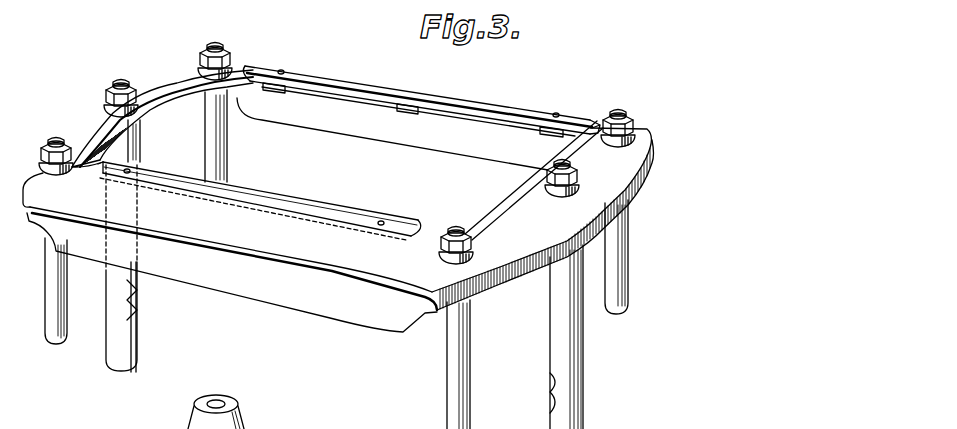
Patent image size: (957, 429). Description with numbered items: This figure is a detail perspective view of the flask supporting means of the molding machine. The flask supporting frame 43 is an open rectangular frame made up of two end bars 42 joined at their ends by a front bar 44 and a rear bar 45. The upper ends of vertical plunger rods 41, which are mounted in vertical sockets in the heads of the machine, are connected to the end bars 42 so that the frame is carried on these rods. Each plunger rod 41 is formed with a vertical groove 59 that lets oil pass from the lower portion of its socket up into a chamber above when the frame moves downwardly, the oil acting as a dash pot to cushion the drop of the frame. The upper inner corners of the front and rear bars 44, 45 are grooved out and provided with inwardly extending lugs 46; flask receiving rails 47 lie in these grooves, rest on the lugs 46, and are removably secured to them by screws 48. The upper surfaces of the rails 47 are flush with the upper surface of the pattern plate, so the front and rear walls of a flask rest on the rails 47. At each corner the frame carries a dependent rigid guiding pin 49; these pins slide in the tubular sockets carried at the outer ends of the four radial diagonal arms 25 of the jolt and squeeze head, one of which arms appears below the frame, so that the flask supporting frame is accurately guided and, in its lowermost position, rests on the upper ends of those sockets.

The radial diagonal arm 25 is at (249, 412).
The plunger rod 41 is at (112, 337).
The end bar 42 is at (96, 134).
The flask supporting frame 43 is at (358, 115).
The front bar 44 is at (223, 235).
The rear bar 45 is at (481, 100).
The lug 46 is at (278, 93).
The flask receiving rail 47 is at (325, 88).
The screw 48 is at (283, 70).
The guiding pin 49 is at (50, 268).
The vertical groove 59 is at (134, 366).